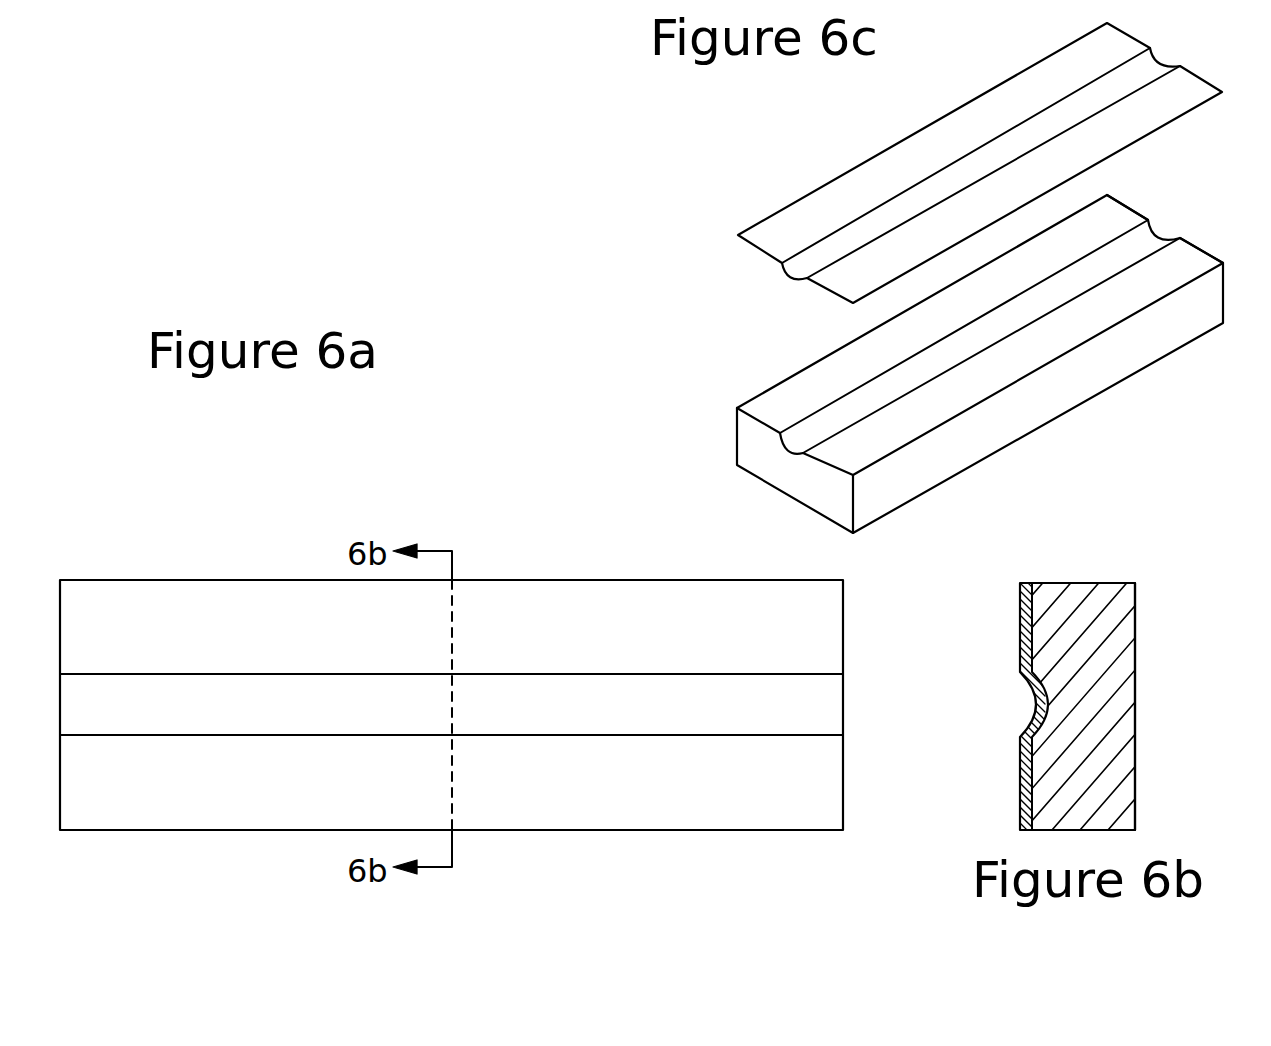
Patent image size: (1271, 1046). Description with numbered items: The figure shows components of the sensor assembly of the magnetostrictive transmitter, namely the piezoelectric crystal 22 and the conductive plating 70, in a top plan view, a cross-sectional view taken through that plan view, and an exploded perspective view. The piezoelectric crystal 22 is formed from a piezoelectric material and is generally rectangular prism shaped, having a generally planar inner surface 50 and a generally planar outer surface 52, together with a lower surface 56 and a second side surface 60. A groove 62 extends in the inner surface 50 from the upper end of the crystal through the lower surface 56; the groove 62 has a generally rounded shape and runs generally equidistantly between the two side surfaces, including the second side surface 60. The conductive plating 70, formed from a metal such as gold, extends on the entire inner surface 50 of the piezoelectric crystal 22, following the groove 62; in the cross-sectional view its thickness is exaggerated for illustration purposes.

In FIG. 6a, the piezoelectric crystal 22 is at (218, 563).
In FIG. 6b, the piezoelectric crystal 22 is at (1094, 569).
In FIG. 6c, the piezoelectric crystal 22 is at (744, 387).
In FIG. 6a, the conductive plating 70 is at (518, 602).
In FIG. 6b, the conductive plating 70 is at (1030, 569).
In FIG. 6c, the conductive plating 70 is at (849, 155).
In FIG. 6c, the inner surface 50 is at (1108, 213).
In FIG. 6b, the outer surface 52 is at (1135, 697).
In FIG. 6c, the lower surface 56 is at (783, 465).
In FIG. 6c, the second side surface 60 is at (1037, 400).
In FIG. 6c, the groove 62 is at (846, 404).